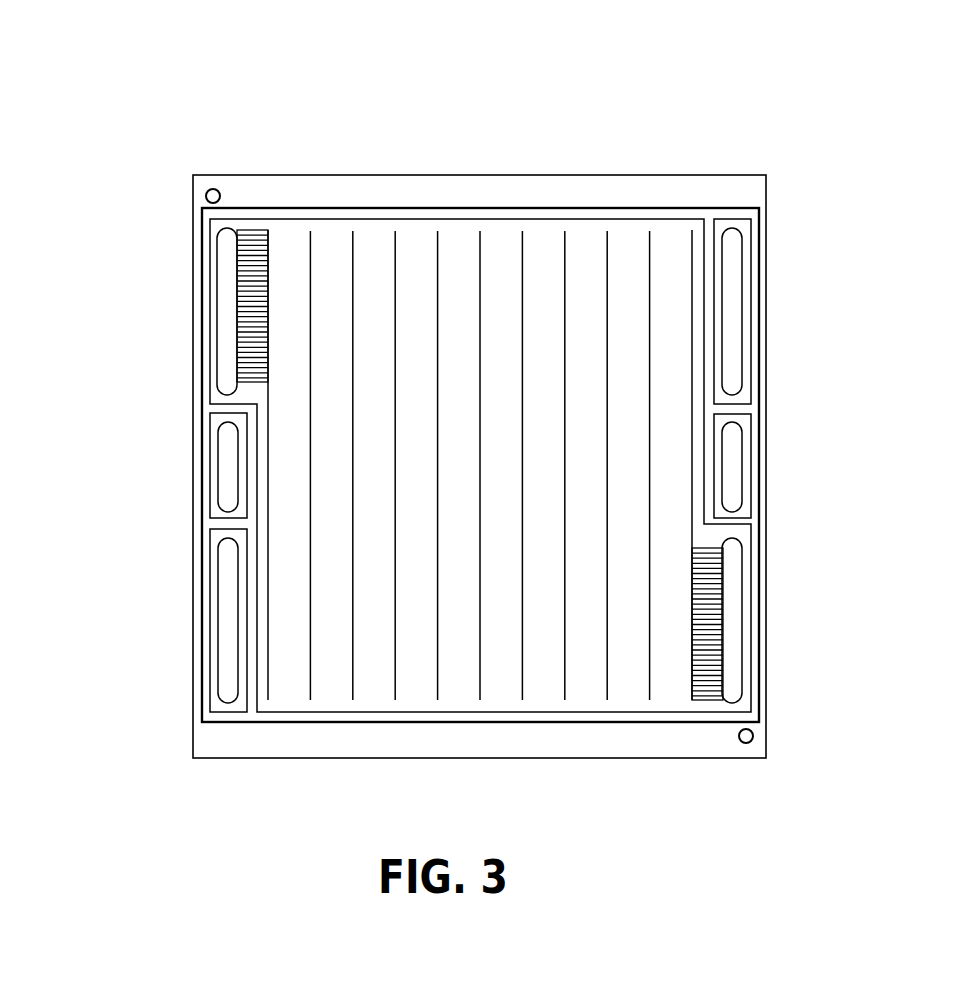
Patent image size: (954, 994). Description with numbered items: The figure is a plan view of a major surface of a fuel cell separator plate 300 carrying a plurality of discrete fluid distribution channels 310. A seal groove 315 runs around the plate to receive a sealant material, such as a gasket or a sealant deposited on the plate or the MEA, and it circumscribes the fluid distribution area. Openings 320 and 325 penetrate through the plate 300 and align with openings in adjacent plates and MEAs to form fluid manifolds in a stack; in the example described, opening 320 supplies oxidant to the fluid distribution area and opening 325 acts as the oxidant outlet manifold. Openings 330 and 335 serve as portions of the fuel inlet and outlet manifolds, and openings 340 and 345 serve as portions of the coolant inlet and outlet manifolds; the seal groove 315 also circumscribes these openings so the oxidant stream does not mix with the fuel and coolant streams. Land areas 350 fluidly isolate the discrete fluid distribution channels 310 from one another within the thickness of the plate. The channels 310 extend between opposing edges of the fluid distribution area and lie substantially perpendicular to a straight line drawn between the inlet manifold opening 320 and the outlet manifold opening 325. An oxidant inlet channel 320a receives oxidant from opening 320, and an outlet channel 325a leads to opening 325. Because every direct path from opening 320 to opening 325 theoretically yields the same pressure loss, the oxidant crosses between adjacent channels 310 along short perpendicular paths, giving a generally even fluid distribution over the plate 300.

The fuel cell separator plate 300 is at (340, 105).
The discrete fluid distribution channels 310 is at (480, 348).
The seal groove 315 is at (757, 330).
The opening 320 is at (223, 270).
The oxidant inlet channel 320a is at (260, 398).
The opening 325 is at (733, 620).
The outlet channel 325a is at (695, 542).
The opening 330 is at (740, 445).
The opening 335 is at (232, 472).
The opening 340 is at (227, 632).
The opening 345 is at (735, 272).
The land areas 350 is at (580, 300).